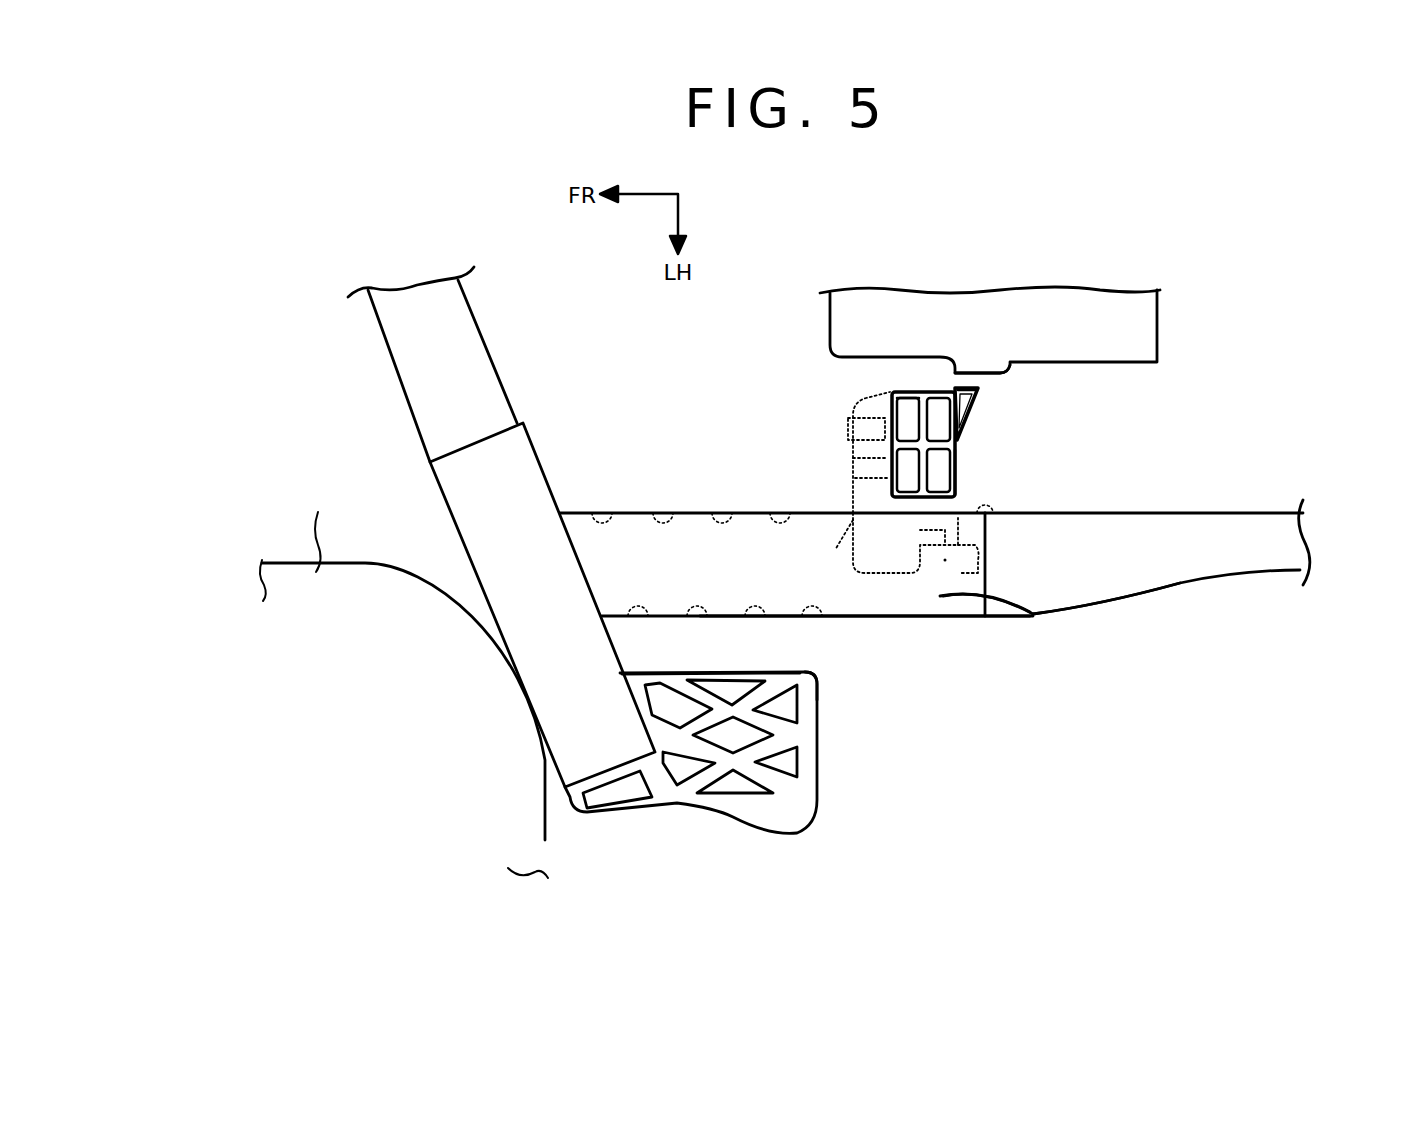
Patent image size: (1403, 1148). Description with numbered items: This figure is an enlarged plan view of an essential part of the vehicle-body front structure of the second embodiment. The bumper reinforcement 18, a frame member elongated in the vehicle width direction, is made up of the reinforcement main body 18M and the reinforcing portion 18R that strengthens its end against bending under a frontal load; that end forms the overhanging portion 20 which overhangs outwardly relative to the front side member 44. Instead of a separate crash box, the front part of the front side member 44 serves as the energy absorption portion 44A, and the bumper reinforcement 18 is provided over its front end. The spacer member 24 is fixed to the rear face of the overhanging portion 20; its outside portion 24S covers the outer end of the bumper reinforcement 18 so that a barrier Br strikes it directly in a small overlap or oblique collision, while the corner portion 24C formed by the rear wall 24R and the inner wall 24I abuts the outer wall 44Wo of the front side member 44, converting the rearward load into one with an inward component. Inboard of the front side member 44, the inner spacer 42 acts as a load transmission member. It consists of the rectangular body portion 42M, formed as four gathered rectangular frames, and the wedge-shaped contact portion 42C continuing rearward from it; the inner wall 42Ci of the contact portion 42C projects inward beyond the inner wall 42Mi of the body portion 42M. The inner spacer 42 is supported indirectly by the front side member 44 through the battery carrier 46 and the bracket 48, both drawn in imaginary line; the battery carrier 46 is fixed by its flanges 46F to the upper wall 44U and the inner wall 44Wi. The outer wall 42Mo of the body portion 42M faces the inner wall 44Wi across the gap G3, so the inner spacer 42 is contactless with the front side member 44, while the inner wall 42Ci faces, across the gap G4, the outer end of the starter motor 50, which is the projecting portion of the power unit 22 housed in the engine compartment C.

The bumper reinforcement 18 is at (501, 527).
The reinforcement main body 18M is at (470, 333).
The reinforcing portion 18R is at (542, 585).
The overhanging portion 20 is at (548, 760).
The power unit 22 is at (990, 359).
The spacer member 24 is at (741, 767).
The inner wall 24I is at (730, 673).
The corner portion 24C is at (808, 680).
The rear wall 24R is at (808, 733).
The outside portion 24S is at (627, 813).
The inner spacer 42 is at (998, 403).
The contact portion 42C is at (978, 404).
The inner wall 42Ci is at (963, 380).
The body portion 42M is at (956, 457).
The inner wall 42Mi is at (913, 390).
The outer wall 42Mo is at (960, 503).
The front side member 44 is at (935, 613).
The energy absorption portion 44A is at (797, 605).
The upper wall 44U is at (1038, 613).
The inner wall 44Wi is at (990, 515).
The outer wall 44Wo is at (958, 618).
The battery carrier 46 is at (906, 487).
The flange 46F is at (852, 530).
The bracket 48 is at (850, 423).
The starter motor 50 is at (993, 368).
The gap G3 is at (917, 505).
The gap G4 is at (973, 382).
The engine compartment C is at (698, 385).
The barrier Br is at (318, 528).